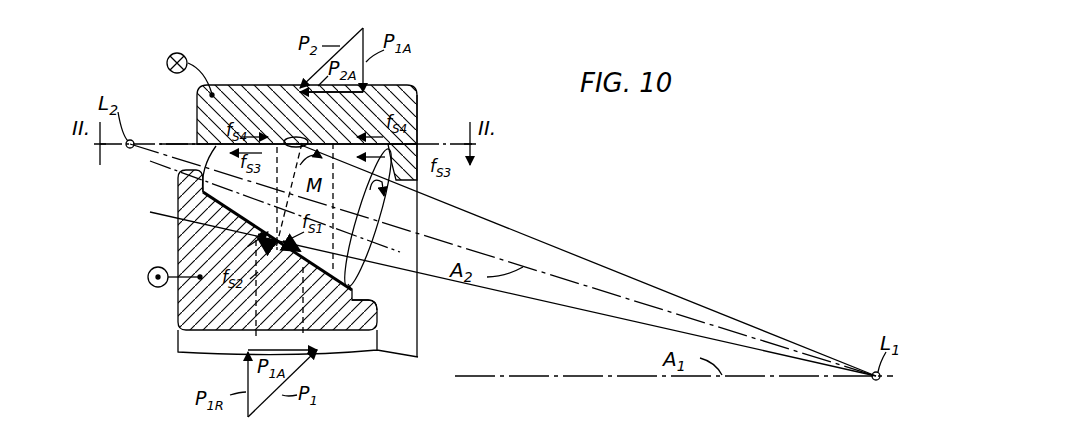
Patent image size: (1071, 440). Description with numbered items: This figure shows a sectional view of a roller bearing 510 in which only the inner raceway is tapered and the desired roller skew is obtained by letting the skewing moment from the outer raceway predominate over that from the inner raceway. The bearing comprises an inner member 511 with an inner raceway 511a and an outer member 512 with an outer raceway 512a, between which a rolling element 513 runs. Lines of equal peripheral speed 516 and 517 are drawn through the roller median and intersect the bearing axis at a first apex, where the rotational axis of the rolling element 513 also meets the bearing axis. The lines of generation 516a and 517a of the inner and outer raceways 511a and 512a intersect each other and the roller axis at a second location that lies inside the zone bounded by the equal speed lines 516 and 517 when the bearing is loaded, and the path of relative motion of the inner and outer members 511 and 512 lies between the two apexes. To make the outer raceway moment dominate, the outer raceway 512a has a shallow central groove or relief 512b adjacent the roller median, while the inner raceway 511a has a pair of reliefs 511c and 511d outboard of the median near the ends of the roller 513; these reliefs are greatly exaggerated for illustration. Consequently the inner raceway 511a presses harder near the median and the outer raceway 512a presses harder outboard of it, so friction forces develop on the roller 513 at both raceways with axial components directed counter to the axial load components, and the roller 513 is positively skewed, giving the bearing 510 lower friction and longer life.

The bearing 510 is at (177, 240).
The inner member 511 is at (187, 322).
The inner raceway 511a is at (356, 286).
The relief in inner raceway 511c is at (206, 193).
The relief in inner raceway 511d is at (367, 301).
The outer member 512 is at (420, 92).
The outer raceway 512a is at (352, 138).
The shallow central groove or relief 512b is at (290, 141).
The rolling element 513 is at (400, 222).
The line of equal peripheral speed 516 is at (587, 313).
The line of generation of inner raceway 516a is at (167, 163).
The line of equal peripheral speed 517 is at (607, 267).
The line of generation of outer raceway 517a is at (182, 143).